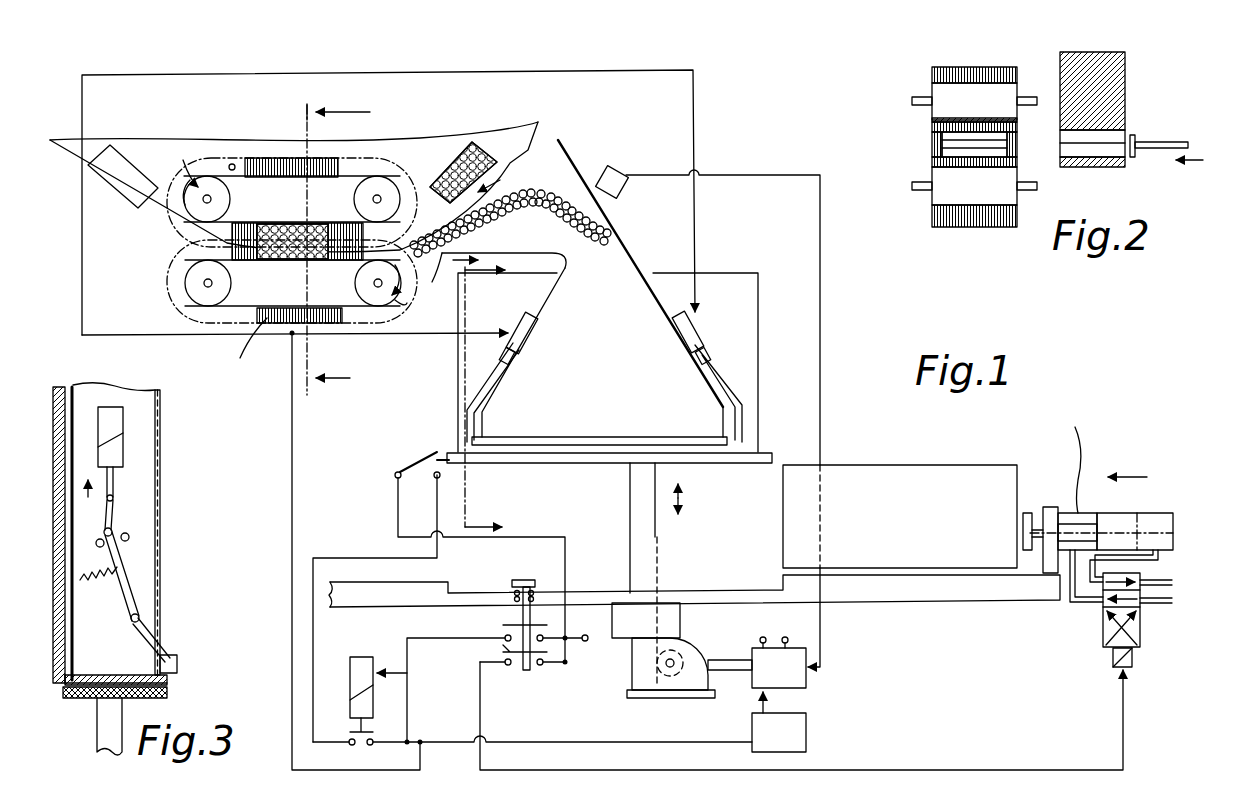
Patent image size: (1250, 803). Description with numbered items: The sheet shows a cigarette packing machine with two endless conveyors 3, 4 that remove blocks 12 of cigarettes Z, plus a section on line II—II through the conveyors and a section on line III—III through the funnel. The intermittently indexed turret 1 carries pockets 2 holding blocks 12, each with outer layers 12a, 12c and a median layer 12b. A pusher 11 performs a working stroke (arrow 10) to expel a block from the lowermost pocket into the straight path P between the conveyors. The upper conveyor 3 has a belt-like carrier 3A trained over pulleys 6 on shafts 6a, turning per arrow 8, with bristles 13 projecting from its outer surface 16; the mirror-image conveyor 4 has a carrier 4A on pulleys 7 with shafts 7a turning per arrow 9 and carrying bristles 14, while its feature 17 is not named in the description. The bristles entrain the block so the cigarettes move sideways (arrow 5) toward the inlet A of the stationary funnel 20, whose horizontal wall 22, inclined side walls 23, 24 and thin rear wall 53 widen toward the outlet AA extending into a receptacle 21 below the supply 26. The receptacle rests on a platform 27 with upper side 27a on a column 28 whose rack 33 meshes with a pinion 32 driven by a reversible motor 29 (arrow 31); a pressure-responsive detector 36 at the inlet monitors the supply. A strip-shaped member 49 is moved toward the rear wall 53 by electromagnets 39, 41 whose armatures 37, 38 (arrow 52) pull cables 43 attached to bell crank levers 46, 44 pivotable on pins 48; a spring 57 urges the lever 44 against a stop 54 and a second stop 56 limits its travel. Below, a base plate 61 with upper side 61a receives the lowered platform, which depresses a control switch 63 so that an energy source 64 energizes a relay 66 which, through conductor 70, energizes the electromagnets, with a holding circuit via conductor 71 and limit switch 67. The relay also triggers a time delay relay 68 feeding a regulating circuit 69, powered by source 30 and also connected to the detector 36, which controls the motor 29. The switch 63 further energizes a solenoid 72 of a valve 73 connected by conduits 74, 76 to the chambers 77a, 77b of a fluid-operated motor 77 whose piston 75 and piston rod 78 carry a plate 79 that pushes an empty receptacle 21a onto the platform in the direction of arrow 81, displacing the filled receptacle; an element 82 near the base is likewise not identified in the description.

In FIG. 1, the rotary indexible conveyor 1 is at (117, 212).
In FIG. 2, the rotary indexible conveyor 1 is at (1124, 87).
In FIG. 1, the pockets 2 is at (130, 167).
In FIG. 2, the pockets 2 is at (1124, 160).
In FIG. 1, the upper endless conveyor 3 is at (211, 154).
In FIG. 2, the upper endless conveyor 3 is at (975, 58).
In FIG. 1, the belt-like carrier 3A is at (291, 180).
In FIG. 2, the belt-like carrier 3A is at (943, 87).
In FIG. 1, the second conveyor 4 is at (160, 294).
In FIG. 2, the second conveyor 4 is at (981, 234).
In FIG. 1, the carrier 4A is at (298, 308).
In FIG. 2, the carrier 4A is at (950, 220).
In FIG. 1, the arrow 5 is at (499, 254).
In FIG. 1, the pulleys 6 is at (228, 199).
In FIG. 2, the pulleys 6 is at (945, 92).
In FIG. 1, the shaft 6a is at (272, 210).
In FIG. 2, the shaft 6a is at (1028, 97).
In FIG. 1, the pulleys 7 is at (231, 287).
In FIG. 2, the pulleys 7 is at (938, 188).
In FIG. 1, the shafts 7a is at (210, 290).
In FIG. 1, the arrow 8 is at (184, 176).
In FIG. 1, the arrow 9 is at (407, 303).
In FIG. 2, the arrow 10 is at (1193, 176).
In FIG. 2, the pusher 11 is at (1137, 137).
In FIG. 1, the block of cigarettes 12 is at (227, 240).
In FIG. 2, the block of cigarettes 12 is at (938, 148).
In FIG. 2, the outer layer 12a is at (1020, 160).
In FIG. 2, the median layer 12b is at (1013, 147).
In FIG. 2, the outer layer 12c is at (1007, 140).
In FIG. 1, the bristles 13 is at (234, 164).
In FIG. 2, the bristles 13 is at (955, 63).
In FIG. 1, the bristles 14 is at (244, 348).
In FIG. 2, the bristles 14 is at (955, 217).
In FIG. 2, the outer surface 16 is at (940, 130).
In FIG. 2, the lower brush layer 17 is at (938, 160).
In FIG. 1, the funnel 20 is at (644, 259).
In FIG. 1, the receptacle 21 is at (760, 296).
In FIG. 3, the receptacle 21 is at (65, 385).
In FIG. 1, the standby receptacle 21a is at (945, 465).
In FIG. 1, the horizontal wall 22 is at (540, 246).
In FIG. 1, the side wall 23 is at (556, 280).
In FIG. 3, the side wall 23 is at (132, 397).
In FIG. 1, the side wall 24 is at (655, 295).
In FIG. 1, the supply 26 is at (607, 237).
In FIG. 3, the supply 26 is at (160, 540).
In FIG. 1, the platform 27 is at (491, 463).
In FIG. 3, the platform 27 is at (170, 693).
In FIG. 1, the upper side of platform 27a is at (768, 450).
In FIG. 1, the column 28 is at (628, 494).
In FIG. 3, the column 28 is at (97, 723).
In FIG. 1, the electric motor 29 is at (765, 629).
In FIG. 1, the energy source 30 is at (780, 636).
In FIG. 1, the double-headed arrow 31 is at (693, 499).
In FIG. 1, the pinion 32 is at (678, 645).
In FIG. 1, the toothed rack 33 is at (660, 560).
In FIG. 1, the detector 36 is at (626, 170).
In FIG. 1, the armature 37 is at (712, 346).
In FIG. 1, the armature 38 is at (466, 404).
In FIG. 3, the armature 38 is at (113, 483).
In FIG. 1, the electromagnet 39 is at (702, 330).
In FIG. 1, the electromagnet 41 is at (508, 343).
In FIG. 3, the electromagnet 41 is at (118, 417).
In FIG. 3, the cable 43 is at (112, 517).
In FIG. 1, the bell crank lever 44 is at (497, 375).
In FIG. 3, the bell crank lever 44 is at (125, 583).
In FIG. 1, the bell crank lever 46 is at (745, 398).
In FIG. 3, the pin 48 is at (140, 618).
In FIG. 1, the article-engaging member 49 is at (712, 445).
In FIG. 3, the article-engaging member 49 is at (178, 665).
In FIG. 3, the arrow 52 is at (90, 502).
In FIG. 3, the rear wall 53 is at (70, 645).
In FIG. 3, the stop 54 is at (96, 545).
In FIG. 3, the second stop 56 is at (127, 541).
In FIG. 3, the helical spring 57 is at (90, 580).
In FIG. 1, the base plate 61 is at (360, 575).
In FIG. 1, the upper side of base plate 61a is at (440, 578).
In FIG. 1, the control switch 63 is at (538, 575).
In FIG. 1, the energy source 64 is at (586, 642).
In FIG. 1, the relay 66 is at (355, 657).
In FIG. 1, the limit switch 67 is at (428, 455).
In FIG. 1, the time delay relay 68 is at (808, 735).
In FIG. 1, the regulating circuit 69 is at (790, 678).
In FIG. 1, the conductor means 70 is at (290, 665).
In FIG. 1, the conductor 71 is at (409, 702).
In FIG. 1, the solenoid 72 is at (1113, 665).
In FIG. 1, the valve 73 is at (1103, 622).
In FIG. 1, the conduit 74 is at (1162, 605).
In FIG. 1, the piston 75 is at (1140, 513).
In FIG. 1, the conduit 76 is at (1168, 582).
In FIG. 1, the fluid-operated motor 77 is at (1090, 505).
In FIG. 1, the chamber 77a is at (1170, 528).
In FIG. 1, the chamber 77b is at (1079, 459).
In FIG. 1, the piston rod 78 is at (1050, 507).
In FIG. 1, the plate 79 is at (1027, 513).
In FIG. 1, the arrow 81 is at (1129, 464).
In FIG. 1, the base 82 is at (775, 590).
In FIG. 1, the path P is at (379, 234).
In FIG. 1, the inlet A is at (620, 129).
In FIG. 1, the cigarettes Z is at (528, 202).
In FIG. 1, the outlet AA is at (601, 432).
In FIG. 1, the section line II— II is at (338, 247).
In FIG. 1, the section line III— III is at (499, 393).